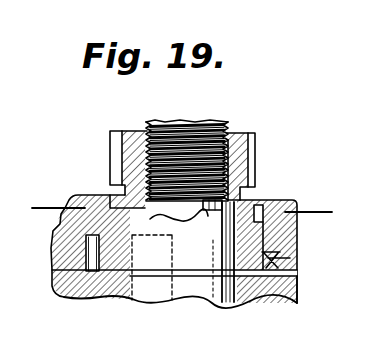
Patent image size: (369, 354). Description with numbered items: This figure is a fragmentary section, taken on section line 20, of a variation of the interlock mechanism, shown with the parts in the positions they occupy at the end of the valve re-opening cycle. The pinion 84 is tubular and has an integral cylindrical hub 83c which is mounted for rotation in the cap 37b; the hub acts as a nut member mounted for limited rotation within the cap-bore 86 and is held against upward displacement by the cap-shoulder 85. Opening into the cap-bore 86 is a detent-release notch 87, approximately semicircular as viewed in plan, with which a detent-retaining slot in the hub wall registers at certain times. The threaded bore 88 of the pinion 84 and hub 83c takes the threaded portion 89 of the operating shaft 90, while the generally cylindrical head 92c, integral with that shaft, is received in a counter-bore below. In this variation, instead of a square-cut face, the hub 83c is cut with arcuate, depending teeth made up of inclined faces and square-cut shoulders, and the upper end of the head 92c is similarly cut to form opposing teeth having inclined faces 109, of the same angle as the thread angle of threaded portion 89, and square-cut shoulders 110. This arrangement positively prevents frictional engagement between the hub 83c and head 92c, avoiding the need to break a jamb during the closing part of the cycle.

The section line 20 is at (320, 202).
The cap 37b is at (297, 243).
The hub 83c is at (280, 252).
The pinion 84 is at (255, 135).
The cap-shoulder 85 is at (261, 205).
The cap-bore 86 is at (297, 277).
The detent-release notch 87 is at (85, 247).
The threaded bore 88 is at (240, 164).
The threaded portion 89 is at (223, 124).
The operating shaft 90 is at (161, 118).
The head 92c is at (205, 260).
The inclined faces 109 is at (216, 251).
The square-cut shoulders 110 is at (179, 220).